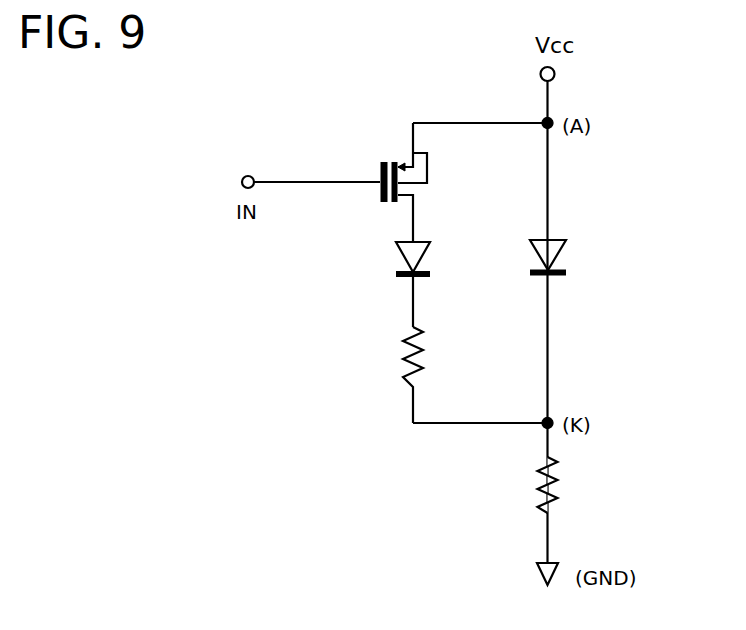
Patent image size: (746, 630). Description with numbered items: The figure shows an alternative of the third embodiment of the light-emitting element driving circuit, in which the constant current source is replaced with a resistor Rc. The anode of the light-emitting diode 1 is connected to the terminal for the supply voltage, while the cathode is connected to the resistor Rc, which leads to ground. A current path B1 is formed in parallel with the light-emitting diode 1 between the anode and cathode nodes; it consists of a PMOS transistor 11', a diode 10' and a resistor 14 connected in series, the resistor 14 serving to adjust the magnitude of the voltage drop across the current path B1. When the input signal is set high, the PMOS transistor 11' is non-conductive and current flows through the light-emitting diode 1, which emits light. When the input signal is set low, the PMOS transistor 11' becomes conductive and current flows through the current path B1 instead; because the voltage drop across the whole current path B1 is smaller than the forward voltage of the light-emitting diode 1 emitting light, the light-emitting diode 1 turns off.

The LED 1 is at (580, 273).
The diode 10' is at (374, 256).
The PMOS transistor 11' is at (363, 182).
The resistor 14 is at (407, 365).
The current path B1 is at (417, 303).
The resistor Rc is at (560, 482).